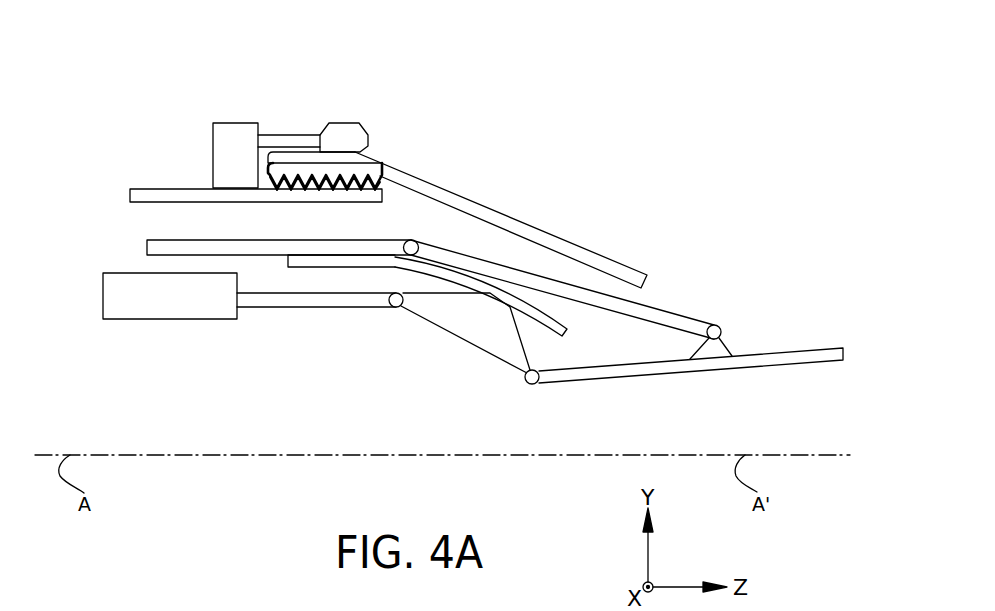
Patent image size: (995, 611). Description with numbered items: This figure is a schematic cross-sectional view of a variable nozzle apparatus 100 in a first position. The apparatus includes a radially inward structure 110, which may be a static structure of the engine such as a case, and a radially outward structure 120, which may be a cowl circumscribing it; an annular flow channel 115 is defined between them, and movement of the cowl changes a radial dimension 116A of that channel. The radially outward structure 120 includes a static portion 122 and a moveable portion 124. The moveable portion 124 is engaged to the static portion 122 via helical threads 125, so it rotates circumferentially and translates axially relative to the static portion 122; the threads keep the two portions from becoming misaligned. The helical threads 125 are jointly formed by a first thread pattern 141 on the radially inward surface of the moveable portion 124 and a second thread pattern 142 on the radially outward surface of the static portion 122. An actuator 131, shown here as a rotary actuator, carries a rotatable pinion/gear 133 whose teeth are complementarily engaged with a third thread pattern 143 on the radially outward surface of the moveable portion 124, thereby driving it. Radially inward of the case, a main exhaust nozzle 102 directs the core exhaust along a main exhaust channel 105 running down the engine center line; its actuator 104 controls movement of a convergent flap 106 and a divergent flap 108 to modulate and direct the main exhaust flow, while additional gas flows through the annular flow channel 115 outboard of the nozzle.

The variable nozzle apparatus 100 is at (90, 66).
The main exhaust nozzle 102 is at (334, 348).
The actuator 104 is at (183, 308).
The main exhaust channel 105 is at (238, 423).
The convergent flap 106 is at (471, 343).
The divergent flap 108 is at (618, 376).
The radially inward structure 110 is at (162, 247).
The annular flow channel 115 is at (399, 236).
The radial dimension 116A is at (638, 300).
The radially outward structure 120 is at (112, 205).
The static portion 122 is at (268, 193).
The moveable portion 124 is at (414, 176).
The helical threads 125 is at (383, 183).
The actuator 131 is at (220, 139).
The pinion/gear 133 is at (343, 137).
The first thread pattern 141 is at (274, 174).
The second thread pattern 142 is at (297, 187).
The third thread pattern 143 is at (305, 157).